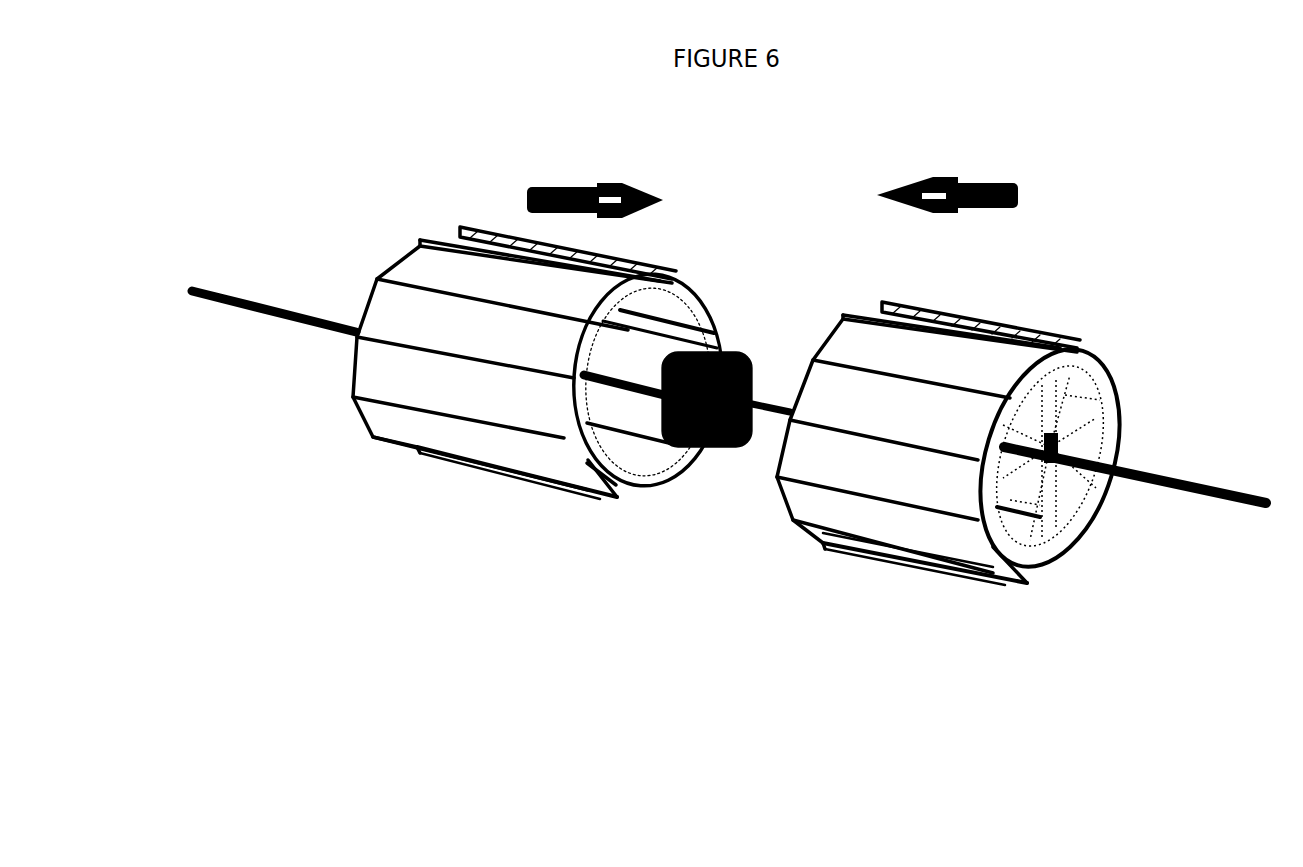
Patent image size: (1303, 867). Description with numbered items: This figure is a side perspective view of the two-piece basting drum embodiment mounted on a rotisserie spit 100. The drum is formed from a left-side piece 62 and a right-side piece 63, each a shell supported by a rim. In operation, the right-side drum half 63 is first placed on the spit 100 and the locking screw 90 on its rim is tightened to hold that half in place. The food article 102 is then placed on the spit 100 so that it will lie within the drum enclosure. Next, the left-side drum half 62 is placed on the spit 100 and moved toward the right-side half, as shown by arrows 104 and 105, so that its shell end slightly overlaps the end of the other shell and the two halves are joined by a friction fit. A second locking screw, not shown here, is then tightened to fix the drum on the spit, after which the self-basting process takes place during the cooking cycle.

The left-side piece 62 is at (500, 500).
The right-side piece 63 is at (890, 585).
The locking screw 90 is at (1067, 413).
The rotisserie spit 100 is at (1224, 480).
The food article 102 is at (743, 347).
The arrow 104 is at (560, 171).
The arrow 105 is at (995, 173).